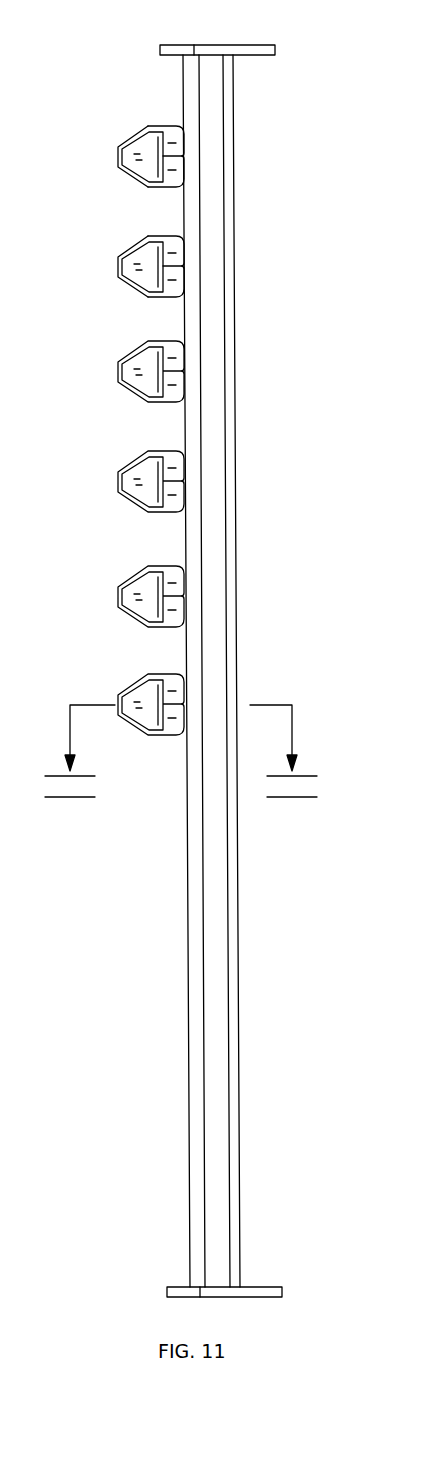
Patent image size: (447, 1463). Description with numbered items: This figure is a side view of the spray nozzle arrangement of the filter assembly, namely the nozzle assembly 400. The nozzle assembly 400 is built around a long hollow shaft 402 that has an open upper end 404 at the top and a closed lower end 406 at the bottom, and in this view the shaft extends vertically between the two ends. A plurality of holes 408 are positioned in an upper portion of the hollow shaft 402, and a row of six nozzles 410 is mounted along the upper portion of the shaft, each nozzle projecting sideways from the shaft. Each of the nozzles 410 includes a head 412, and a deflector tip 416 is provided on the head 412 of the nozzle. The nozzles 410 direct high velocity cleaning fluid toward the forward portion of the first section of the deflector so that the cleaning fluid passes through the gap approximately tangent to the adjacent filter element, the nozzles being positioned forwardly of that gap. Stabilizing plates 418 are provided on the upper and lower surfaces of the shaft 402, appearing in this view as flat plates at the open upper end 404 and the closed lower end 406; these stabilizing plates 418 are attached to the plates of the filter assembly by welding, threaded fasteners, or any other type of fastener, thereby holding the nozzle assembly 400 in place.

The nozzle assembly 400 is at (234, 213).
The hollow shaft 402 is at (233, 178).
The open upper end 404 is at (234, 62).
The closed lower end 406 is at (263, 1287).
The holes 408 is at (184, 152).
The nozzles 410 is at (183, 455).
The head 412 is at (130, 252).
The deflector tip 416 is at (165, 252).
The stabilizing plates 418 is at (174, 45).